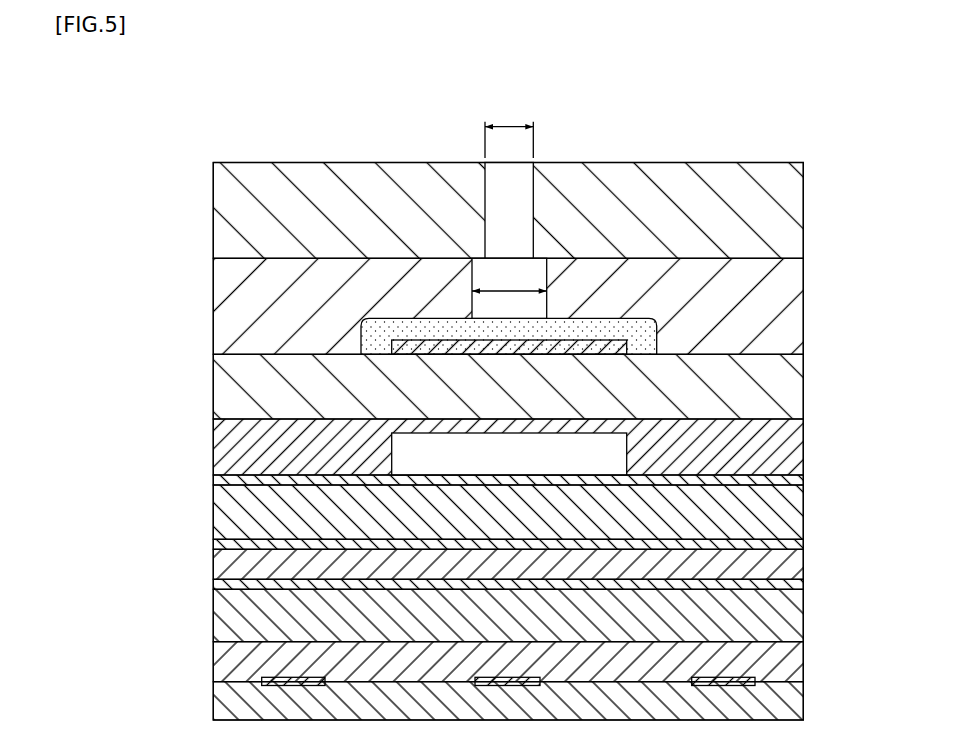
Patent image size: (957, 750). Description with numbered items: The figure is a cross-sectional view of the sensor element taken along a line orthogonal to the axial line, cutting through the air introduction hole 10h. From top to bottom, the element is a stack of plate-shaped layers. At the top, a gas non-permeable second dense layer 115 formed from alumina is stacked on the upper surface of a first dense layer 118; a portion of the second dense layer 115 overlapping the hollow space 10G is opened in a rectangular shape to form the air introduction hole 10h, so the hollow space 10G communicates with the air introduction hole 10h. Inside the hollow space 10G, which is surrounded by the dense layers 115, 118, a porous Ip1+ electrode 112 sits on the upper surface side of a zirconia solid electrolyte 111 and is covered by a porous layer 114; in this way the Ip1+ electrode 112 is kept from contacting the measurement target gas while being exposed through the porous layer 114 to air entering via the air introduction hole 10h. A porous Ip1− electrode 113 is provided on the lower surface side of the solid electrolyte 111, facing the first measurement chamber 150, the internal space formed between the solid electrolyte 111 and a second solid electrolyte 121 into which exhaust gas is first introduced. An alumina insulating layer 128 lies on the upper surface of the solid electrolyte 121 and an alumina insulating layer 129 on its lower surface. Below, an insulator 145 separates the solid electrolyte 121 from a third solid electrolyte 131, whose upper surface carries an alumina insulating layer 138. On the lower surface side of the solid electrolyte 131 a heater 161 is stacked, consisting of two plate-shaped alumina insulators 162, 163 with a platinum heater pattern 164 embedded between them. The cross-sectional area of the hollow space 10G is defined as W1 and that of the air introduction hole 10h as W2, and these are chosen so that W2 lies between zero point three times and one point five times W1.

The second dense layer 115 is at (240, 229).
The first dense layer 118 is at (240, 308).
The Ip1+ electrode 112 is at (477, 355).
The solid electrolyte 111 is at (241, 384).
The Ip1− electrode 113 is at (455, 432).
The alumina insulating layer 128 is at (220, 480).
The solid electrolyte 121 is at (230, 512).
The alumina insulating layer 129 is at (217, 544).
The insulator 145 is at (230, 567).
The alumina insulating layer 138 is at (217, 587).
The solid electrolyte 131 is at (230, 617).
The heater 161 is at (441, 675).
The insulator 162 is at (230, 658).
The heater pattern 164 is at (283, 683).
The insulator 163 is at (225, 708).
The first measurement chamber 150 is at (524, 468).
The air introduction hole 10h is at (521, 204).
The hollow space 10G is at (528, 310).
The porous layer 114 is at (643, 340).
The cross-sectional area of the hollow space W1 is at (509, 288).
The cross-sectional area of the air introduction hole W2 is at (509, 130).